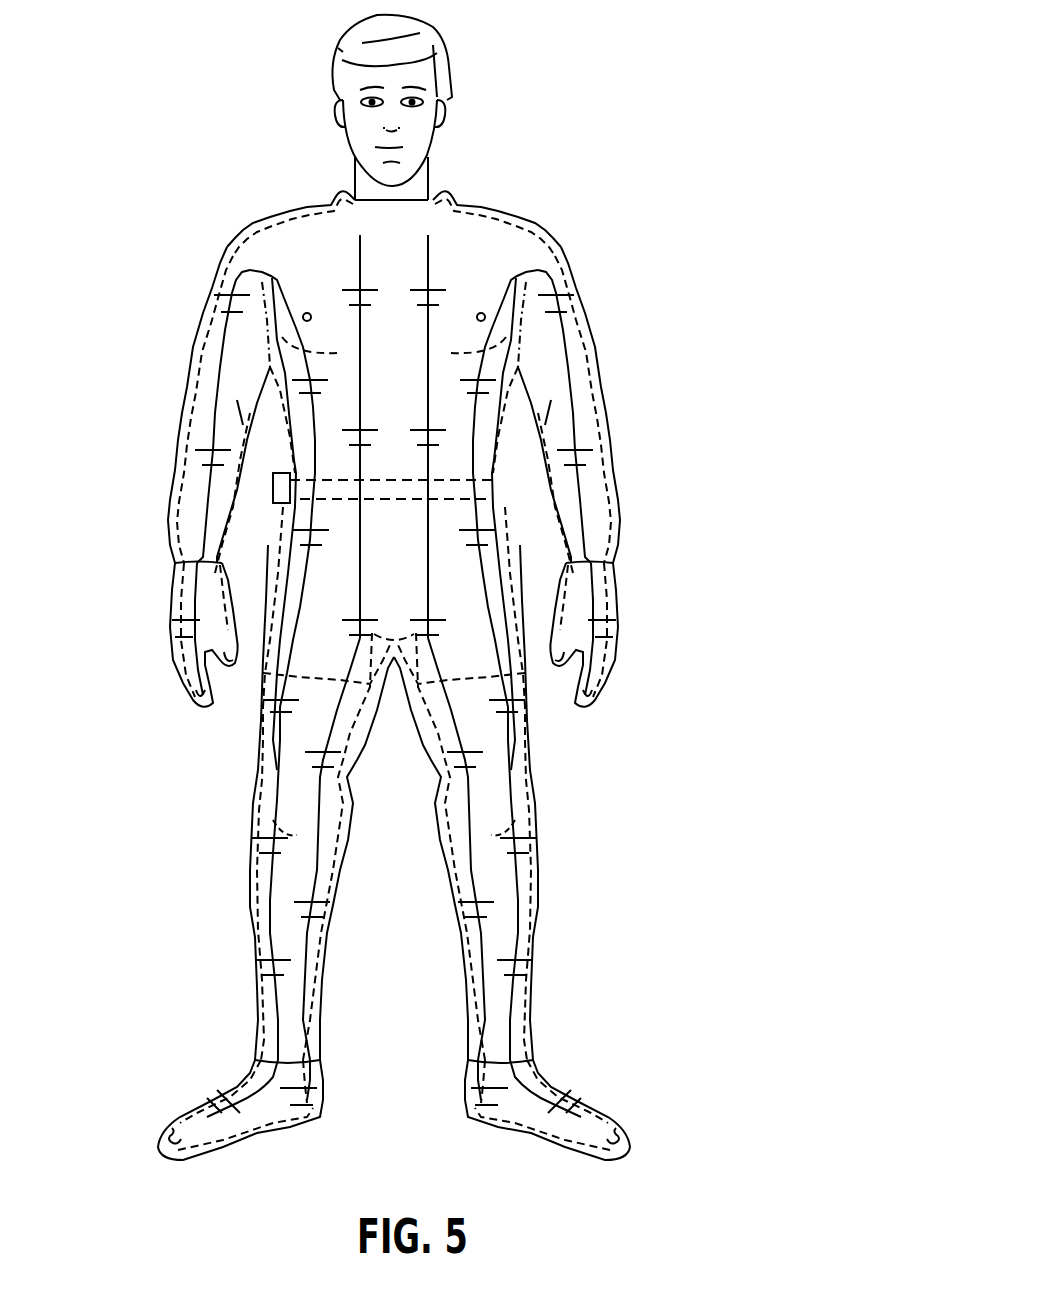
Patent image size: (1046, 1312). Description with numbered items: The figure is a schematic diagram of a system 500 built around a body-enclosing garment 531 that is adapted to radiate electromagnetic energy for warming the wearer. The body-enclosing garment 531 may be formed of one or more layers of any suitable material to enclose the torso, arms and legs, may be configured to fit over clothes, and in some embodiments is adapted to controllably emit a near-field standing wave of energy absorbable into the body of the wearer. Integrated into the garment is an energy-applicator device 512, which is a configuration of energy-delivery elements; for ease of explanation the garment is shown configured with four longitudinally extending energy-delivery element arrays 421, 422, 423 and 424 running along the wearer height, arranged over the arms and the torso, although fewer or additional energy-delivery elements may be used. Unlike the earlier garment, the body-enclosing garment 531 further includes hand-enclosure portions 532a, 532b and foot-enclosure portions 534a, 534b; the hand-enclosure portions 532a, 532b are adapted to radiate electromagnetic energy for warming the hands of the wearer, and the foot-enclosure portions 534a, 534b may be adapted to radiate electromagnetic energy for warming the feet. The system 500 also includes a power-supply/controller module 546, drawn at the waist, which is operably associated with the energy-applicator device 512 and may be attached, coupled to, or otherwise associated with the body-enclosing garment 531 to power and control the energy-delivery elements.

The system 500 is at (665, 49).
The energy-applicator device 512 is at (488, 198).
The energy-delivery element array 421 is at (218, 341).
The energy-delivery element array 422 is at (327, 282).
The energy-delivery element array 423 is at (450, 282).
The energy-delivery element array 424 is at (568, 345).
The body-enclosing garment 531 is at (190, 400).
The power-supply/controller module 546 is at (273, 487).
The hand-enclosure portion 532a is at (170, 614).
The hand-enclosure portion 532b is at (620, 617).
The foot-enclosure portion 534a is at (200, 1110).
The foot-enclosure portion 534b is at (597, 1110).